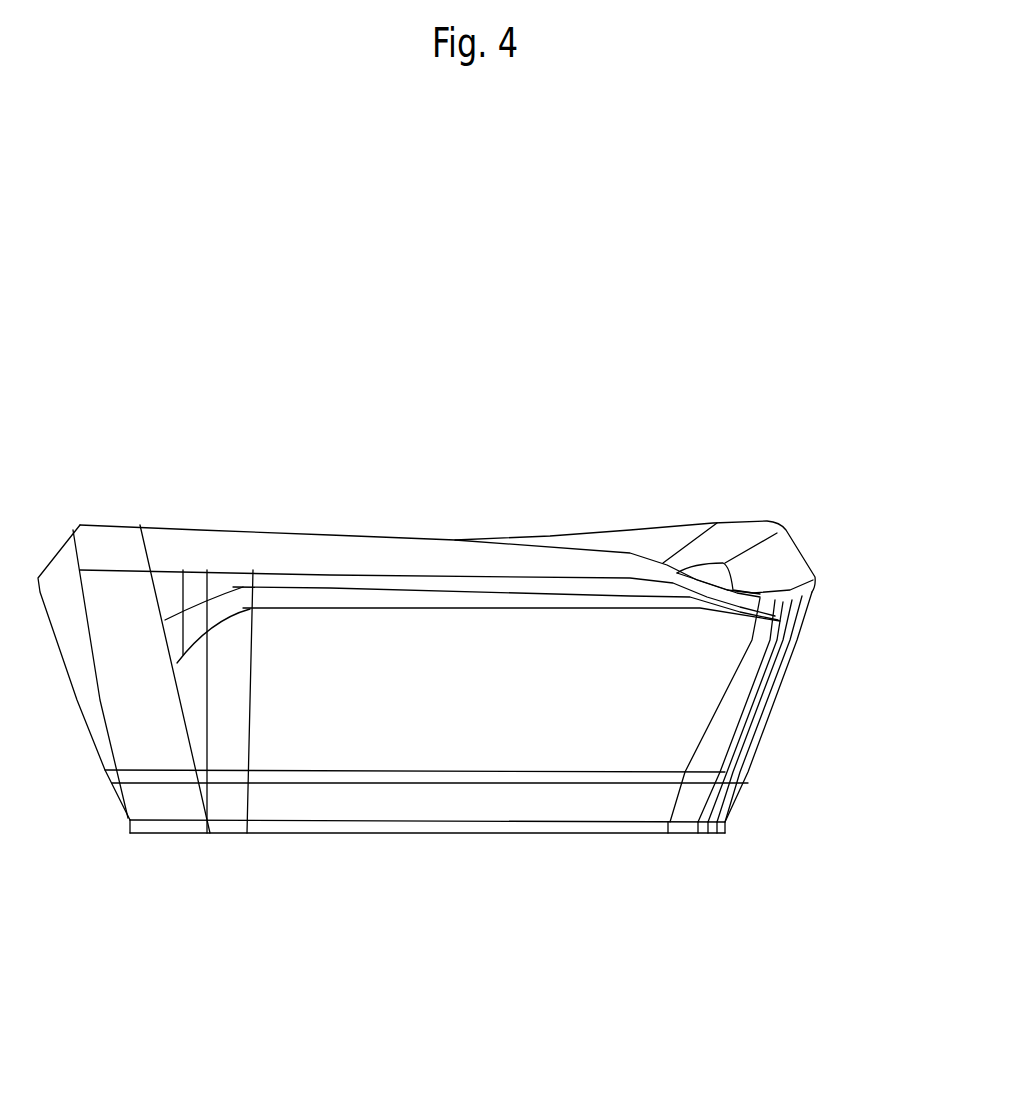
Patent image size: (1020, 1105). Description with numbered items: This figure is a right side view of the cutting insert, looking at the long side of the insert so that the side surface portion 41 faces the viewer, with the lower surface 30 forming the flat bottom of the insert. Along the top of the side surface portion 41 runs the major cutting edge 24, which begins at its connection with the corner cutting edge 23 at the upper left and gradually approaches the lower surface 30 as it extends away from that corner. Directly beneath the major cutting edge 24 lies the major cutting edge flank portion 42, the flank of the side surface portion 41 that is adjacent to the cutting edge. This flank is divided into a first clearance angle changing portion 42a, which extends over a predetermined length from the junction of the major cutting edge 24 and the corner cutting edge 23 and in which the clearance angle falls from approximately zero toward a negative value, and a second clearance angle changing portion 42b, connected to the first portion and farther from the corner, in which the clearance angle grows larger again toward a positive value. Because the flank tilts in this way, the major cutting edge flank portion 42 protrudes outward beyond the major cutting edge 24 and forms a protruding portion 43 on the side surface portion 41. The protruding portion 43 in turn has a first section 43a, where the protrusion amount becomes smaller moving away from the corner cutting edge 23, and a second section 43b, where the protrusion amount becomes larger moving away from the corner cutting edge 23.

The corner cutting edge 23 is at (97, 522).
The major cutting edge 24 is at (345, 535).
The lower surface 30 is at (605, 834).
The side surface portion 41 is at (650, 705).
The major cutting edge flank portion 42 is at (446, 559).
The first clearance angle changing portion 42a is at (255, 555).
The second clearance angle changing portion 42b is at (632, 483).
The protruding portion 43 is at (426, 814).
The first section 43a is at (427, 583).
The second section 43b is at (233, 583).